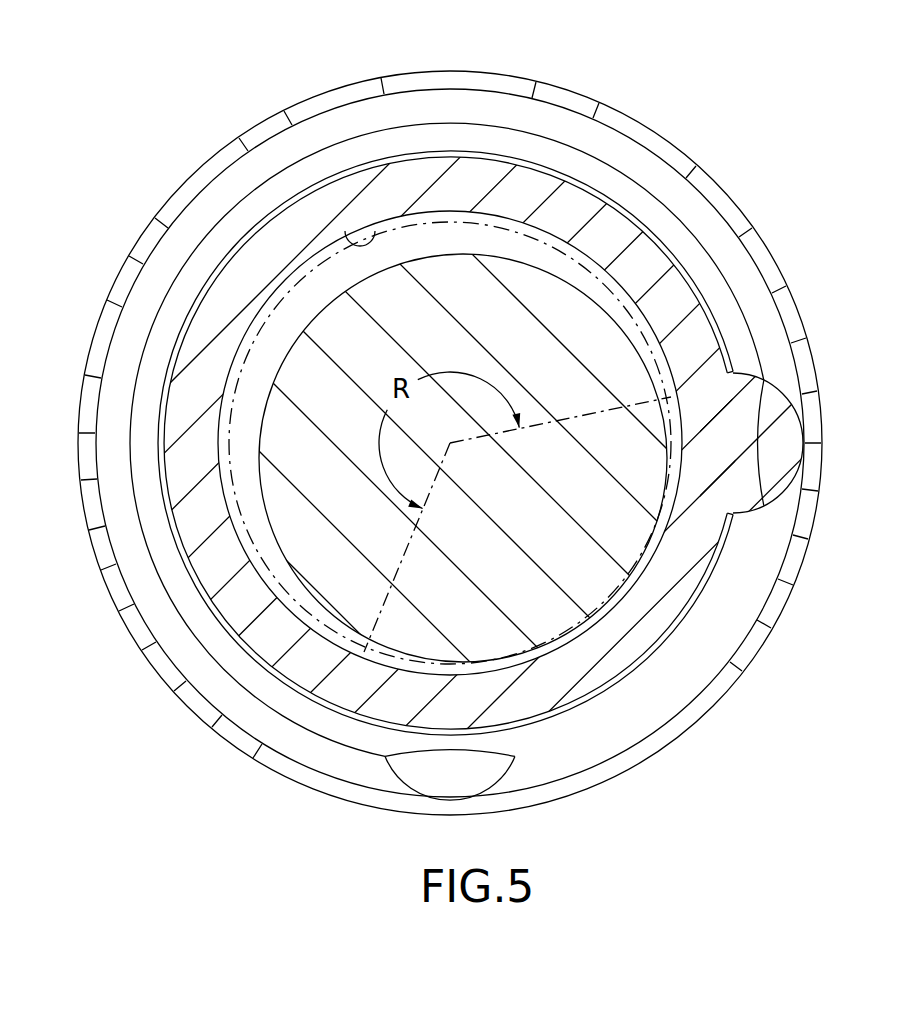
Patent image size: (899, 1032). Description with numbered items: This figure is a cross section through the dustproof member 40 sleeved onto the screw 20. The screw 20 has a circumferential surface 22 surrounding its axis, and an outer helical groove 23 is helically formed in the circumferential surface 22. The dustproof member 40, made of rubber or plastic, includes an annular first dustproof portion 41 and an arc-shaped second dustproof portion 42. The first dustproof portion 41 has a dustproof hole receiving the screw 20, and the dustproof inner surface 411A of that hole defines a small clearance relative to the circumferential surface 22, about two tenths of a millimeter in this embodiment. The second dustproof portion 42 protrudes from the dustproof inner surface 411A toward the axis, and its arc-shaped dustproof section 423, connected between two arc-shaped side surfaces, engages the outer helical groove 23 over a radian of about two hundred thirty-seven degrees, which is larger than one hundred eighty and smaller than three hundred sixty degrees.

The screw 20 is at (596, 592).
The circumferential surface 22 is at (550, 243).
The outer helical groove 23 is at (501, 450).
The dustproof member 40 is at (653, 257).
The first dustproof portion 41 is at (523, 183).
The dustproof inner surface 411A is at (342, 233).
The second dustproof portion 42 is at (300, 302).
The arc-shaped dustproof section 423 is at (742, 368).